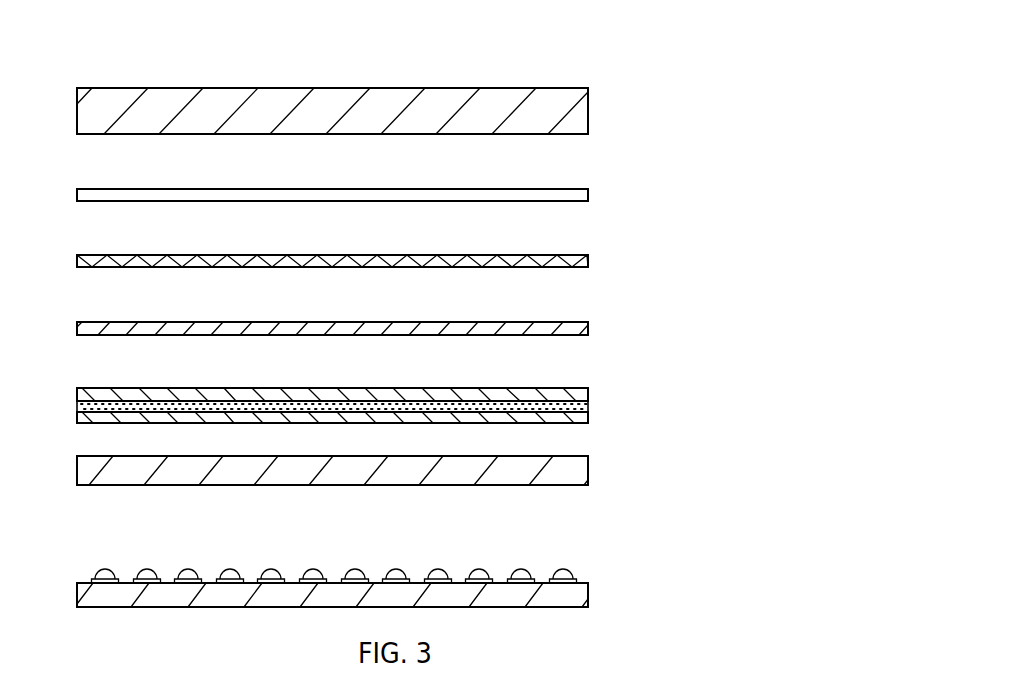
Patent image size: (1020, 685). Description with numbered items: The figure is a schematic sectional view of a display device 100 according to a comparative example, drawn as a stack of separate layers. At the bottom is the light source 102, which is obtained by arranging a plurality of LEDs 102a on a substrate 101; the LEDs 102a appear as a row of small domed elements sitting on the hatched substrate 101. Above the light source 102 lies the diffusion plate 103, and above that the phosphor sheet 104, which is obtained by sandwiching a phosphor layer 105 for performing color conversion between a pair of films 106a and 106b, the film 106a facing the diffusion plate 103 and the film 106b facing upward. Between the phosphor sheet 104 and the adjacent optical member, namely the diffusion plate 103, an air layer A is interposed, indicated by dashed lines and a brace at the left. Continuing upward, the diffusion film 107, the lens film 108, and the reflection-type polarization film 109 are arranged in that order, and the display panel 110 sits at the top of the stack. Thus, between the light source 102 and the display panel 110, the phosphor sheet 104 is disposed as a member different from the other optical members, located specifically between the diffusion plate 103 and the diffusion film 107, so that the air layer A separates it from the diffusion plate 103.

The display device 100 is at (571, 53).
The display panel 110 is at (584, 106).
The reflection-type polarization film 109 is at (584, 193).
The lens film 108 is at (584, 259).
The diffusion film 107 is at (584, 326).
The phosphor sheet 104 is at (407, 407).
The film 106b is at (584, 392).
The phosphor layer 105 is at (584, 405).
The film 106a is at (584, 419).
The air layer A is at (73, 456).
The diffusion plate 103 is at (584, 470).
The light source 102 is at (410, 576).
The LEDs 102a is at (576, 567).
The substrate 101 is at (584, 592).